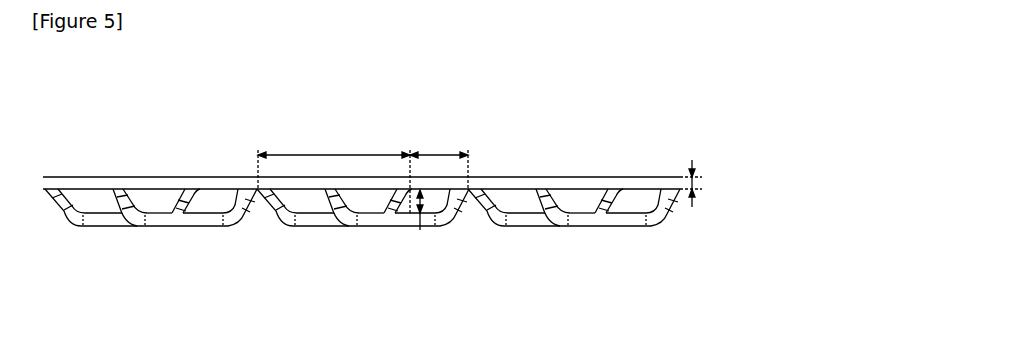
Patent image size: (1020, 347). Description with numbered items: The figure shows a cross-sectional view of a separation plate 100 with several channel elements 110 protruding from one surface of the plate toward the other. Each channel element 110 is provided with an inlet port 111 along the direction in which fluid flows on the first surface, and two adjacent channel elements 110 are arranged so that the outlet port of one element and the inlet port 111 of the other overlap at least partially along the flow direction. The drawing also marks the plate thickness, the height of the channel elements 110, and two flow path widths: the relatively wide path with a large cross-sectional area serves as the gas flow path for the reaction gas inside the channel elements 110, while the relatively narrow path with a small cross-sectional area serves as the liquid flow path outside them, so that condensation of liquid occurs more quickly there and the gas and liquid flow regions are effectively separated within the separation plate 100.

The separation plate 100 is at (665, 148).
The channel element 110 is at (277, 230).
The inlet port 111 is at (305, 204).